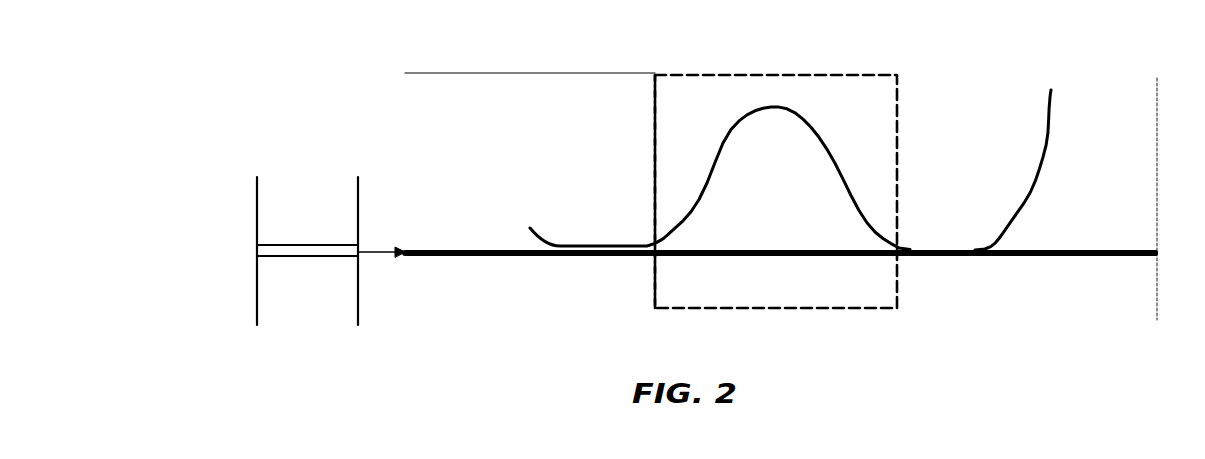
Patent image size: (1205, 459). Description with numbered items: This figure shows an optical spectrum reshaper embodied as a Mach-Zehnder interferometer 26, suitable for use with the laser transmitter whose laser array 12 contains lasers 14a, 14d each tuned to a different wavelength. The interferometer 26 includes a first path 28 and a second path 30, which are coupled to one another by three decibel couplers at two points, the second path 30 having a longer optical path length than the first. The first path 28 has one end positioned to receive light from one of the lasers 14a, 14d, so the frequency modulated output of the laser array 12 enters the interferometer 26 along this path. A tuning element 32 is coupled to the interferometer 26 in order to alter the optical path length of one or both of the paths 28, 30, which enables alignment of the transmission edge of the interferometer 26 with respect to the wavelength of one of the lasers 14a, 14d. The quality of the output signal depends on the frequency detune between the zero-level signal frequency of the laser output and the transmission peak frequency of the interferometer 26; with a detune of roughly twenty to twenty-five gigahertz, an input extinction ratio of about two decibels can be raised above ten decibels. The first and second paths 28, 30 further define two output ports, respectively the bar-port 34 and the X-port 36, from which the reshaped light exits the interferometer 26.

The laser array 12 is at (246, 204).
The laser 14a is at (307, 253).
The laser 14d is at (307, 253).
The Mach-Zehnder interferometer 26 is at (903, 66).
The first path 28 is at (770, 258).
The second path 30 is at (771, 108).
The tuning element 32 is at (653, 130).
The bar-port 34 is at (1050, 127).
The X-port 36 is at (1044, 250).